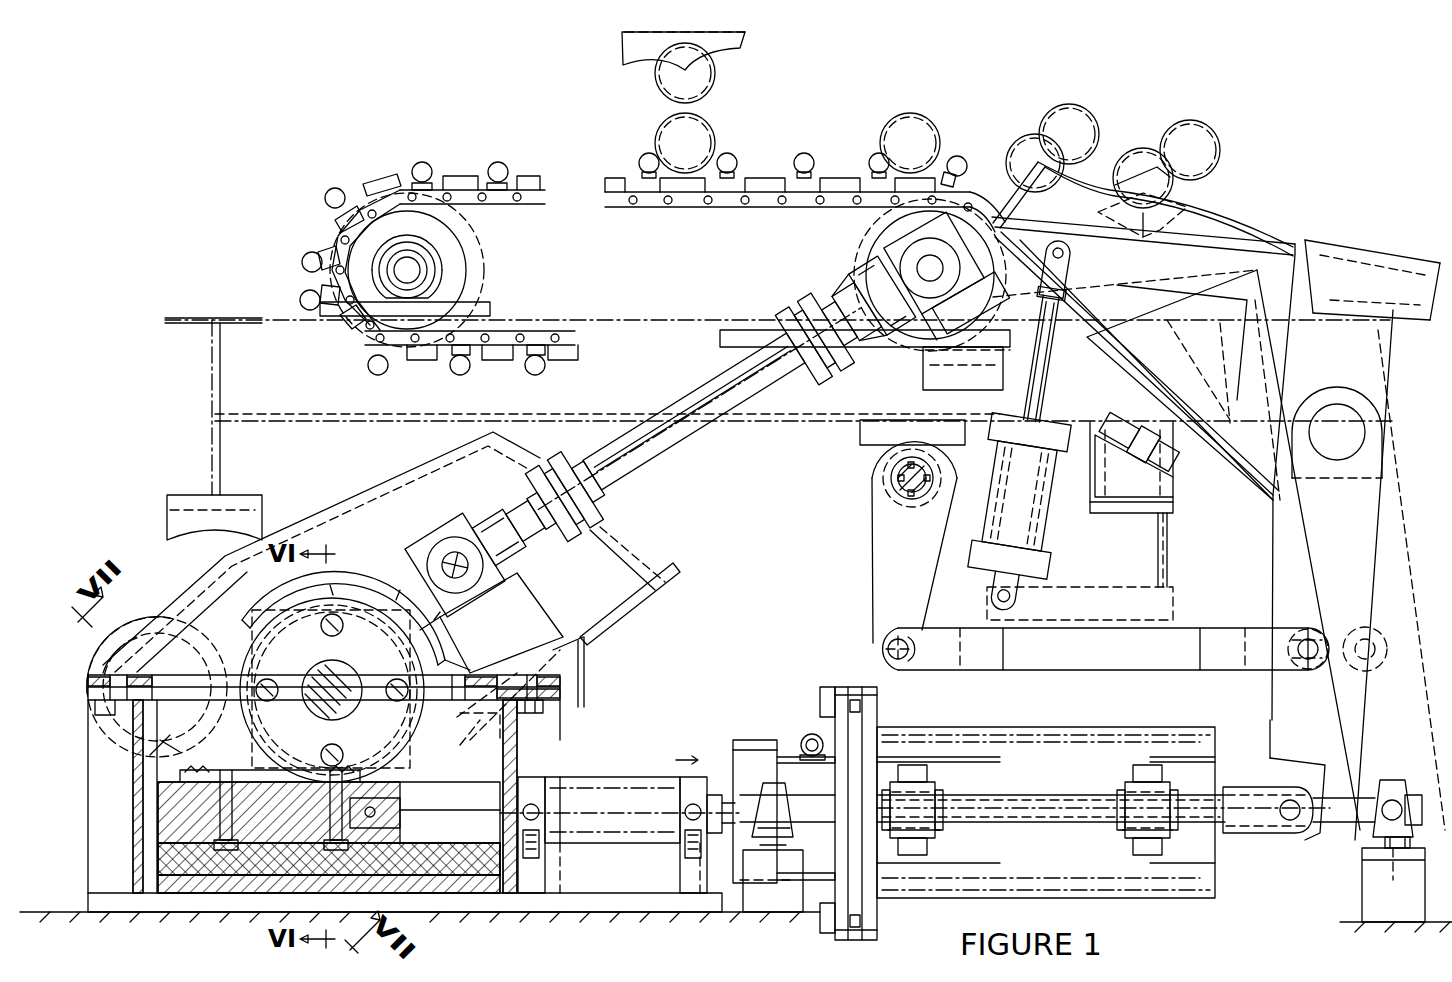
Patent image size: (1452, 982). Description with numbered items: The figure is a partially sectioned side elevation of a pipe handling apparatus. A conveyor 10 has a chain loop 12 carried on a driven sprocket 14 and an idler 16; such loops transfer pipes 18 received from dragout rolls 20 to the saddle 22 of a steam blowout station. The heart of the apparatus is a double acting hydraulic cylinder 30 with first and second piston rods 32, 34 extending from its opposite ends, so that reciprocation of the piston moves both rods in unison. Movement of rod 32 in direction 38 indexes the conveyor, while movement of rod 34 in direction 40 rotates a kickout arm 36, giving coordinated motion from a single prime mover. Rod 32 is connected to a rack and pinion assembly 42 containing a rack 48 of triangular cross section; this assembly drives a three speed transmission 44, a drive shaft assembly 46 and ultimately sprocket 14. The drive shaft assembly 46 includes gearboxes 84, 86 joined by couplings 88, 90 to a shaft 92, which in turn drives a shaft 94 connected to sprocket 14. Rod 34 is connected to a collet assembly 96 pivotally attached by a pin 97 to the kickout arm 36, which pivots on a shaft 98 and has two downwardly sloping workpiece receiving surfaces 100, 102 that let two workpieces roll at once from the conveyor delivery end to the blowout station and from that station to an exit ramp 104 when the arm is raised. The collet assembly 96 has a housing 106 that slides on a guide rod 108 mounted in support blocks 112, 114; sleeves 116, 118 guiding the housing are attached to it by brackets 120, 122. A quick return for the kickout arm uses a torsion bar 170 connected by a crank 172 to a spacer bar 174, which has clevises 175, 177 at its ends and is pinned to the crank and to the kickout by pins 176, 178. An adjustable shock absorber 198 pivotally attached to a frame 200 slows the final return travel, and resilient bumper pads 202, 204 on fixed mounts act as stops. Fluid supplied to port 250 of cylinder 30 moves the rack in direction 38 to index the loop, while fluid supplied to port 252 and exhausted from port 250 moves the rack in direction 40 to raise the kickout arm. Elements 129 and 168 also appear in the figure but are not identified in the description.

The conveyor 10 is at (346, 172).
The chain loop 12 is at (326, 275).
The driven sprocket 14 is at (874, 230).
The idler 16 is at (486, 262).
The pipes 18 is at (654, 142).
The dragout rolls 20 is at (748, 50).
The saddle 22 is at (1216, 194).
The double acting hydraulic cylinder 30 is at (622, 850).
The first piston rod 32 is at (464, 836).
The second piston rod 34 is at (726, 778).
The kickout arm 36 is at (1388, 555).
The direction 38 is at (479, 787).
The direction 40 is at (684, 734).
The rack and pinion assembly 42 is at (156, 783).
The three speed transmission 44 is at (382, 476).
The drive shaft assembly 46 is at (719, 374).
The rack 48 is at (418, 740).
The gearbox 84 is at (488, 515).
The gearbox 86 is at (848, 286).
The coupling 88 is at (605, 498).
The coupling 90 is at (842, 376).
The shaft 92 is at (696, 442).
The shaft 94 is at (934, 252).
The collet assembly 96 is at (1062, 711).
The pin 97 is at (1277, 838).
The shaft 98 is at (1322, 398).
The workpiece receiving surface 100 is at (1094, 150).
The workpiece receiving surface 102 is at (1208, 180).
The exit ramp 104 is at (1362, 248).
The housing 106 is at (1176, 721).
The guide rod 108 is at (1008, 790).
The support block 112 is at (774, 758).
The support block 114 is at (1390, 770).
The sleeve 116 is at (940, 850).
The sleeve 118 is at (1119, 858).
The bracket 120 is at (926, 780).
The bracket 122 is at (1134, 772).
The arm 129 is at (1268, 848).
The eye bolt 168 is at (801, 720).
The torsion bar 170 is at (887, 474).
The crank 172 is at (864, 576).
The spacer bar 174 is at (1050, 676).
The clevis 175 is at (944, 678).
The pin 176 is at (871, 649).
The clevis 177 is at (1239, 624).
The pin 178 is at (1310, 634).
The adjustable shock absorber 198 is at (1046, 534).
The frame 200 is at (1180, 581).
The resilient bumper pad 202 is at (1108, 414).
The resilient bumper pad 204 is at (1166, 464).
The port 250 is at (560, 764).
The port 252 is at (668, 764).